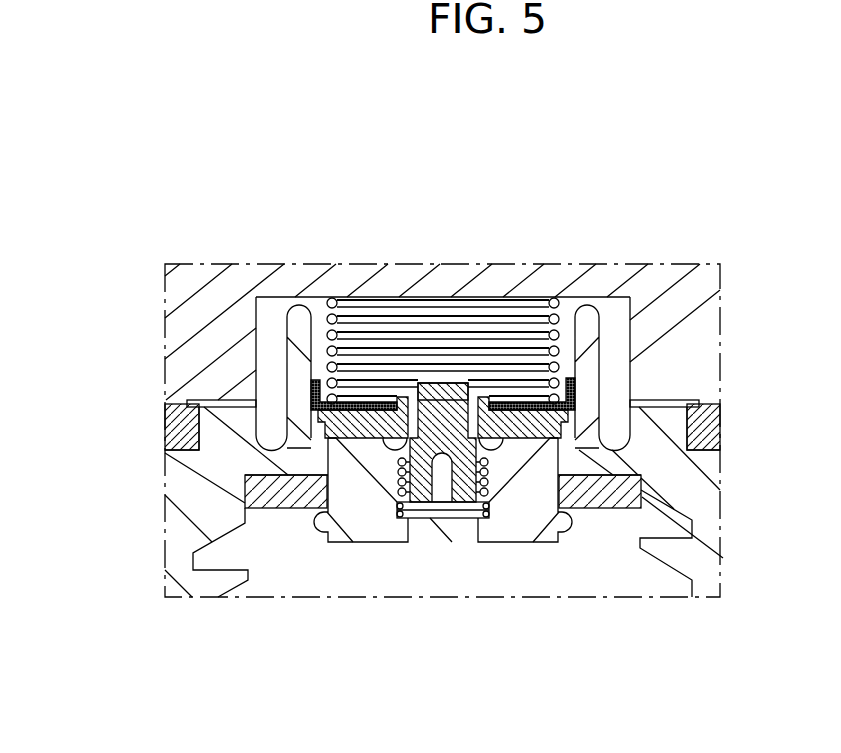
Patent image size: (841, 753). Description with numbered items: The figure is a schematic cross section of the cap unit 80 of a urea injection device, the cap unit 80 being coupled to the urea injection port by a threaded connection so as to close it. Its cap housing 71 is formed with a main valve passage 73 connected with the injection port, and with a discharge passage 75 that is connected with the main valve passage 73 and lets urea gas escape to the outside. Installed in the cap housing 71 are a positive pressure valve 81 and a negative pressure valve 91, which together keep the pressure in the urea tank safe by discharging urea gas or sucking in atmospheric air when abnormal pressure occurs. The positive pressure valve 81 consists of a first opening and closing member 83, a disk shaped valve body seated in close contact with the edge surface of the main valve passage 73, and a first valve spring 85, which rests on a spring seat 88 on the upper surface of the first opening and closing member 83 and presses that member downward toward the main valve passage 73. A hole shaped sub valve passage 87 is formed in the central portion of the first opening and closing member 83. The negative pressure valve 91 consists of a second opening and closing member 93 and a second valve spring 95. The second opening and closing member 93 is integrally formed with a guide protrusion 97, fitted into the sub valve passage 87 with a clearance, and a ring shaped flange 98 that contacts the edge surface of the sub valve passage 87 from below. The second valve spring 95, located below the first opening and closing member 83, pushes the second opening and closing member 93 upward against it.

The cap housing 71 is at (733, 367).
The main valve passage 73 is at (447, 534).
The discharge passage 75 is at (274, 378).
The cap unit 80 is at (465, 98).
The positive pressure valve 81 is at (555, 440).
The first opening and closing member 83 is at (386, 496).
The first valve spring 85 is at (560, 340).
The sub valve passage 87 is at (437, 383).
The spring seat 88 is at (570, 405).
The negative pressure valve 91 is at (398, 518).
The second opening and closing member 93 is at (517, 182).
The second valve spring 95 is at (516, 469).
The guide protrusion 97 is at (455, 397).
The ring shaped flange 98 is at (500, 398).